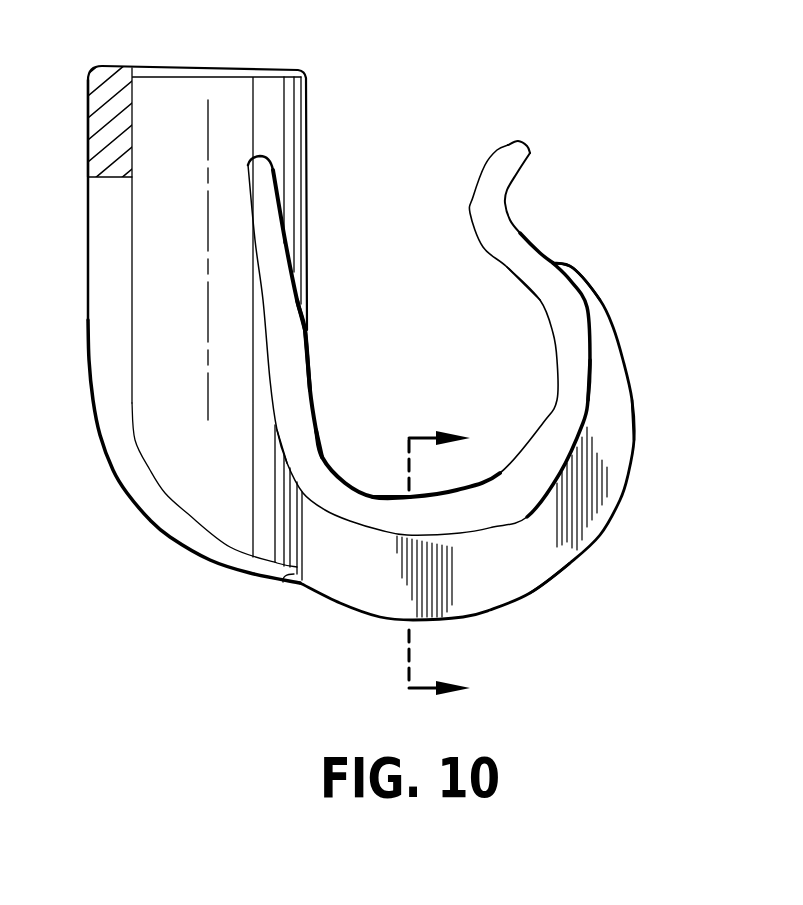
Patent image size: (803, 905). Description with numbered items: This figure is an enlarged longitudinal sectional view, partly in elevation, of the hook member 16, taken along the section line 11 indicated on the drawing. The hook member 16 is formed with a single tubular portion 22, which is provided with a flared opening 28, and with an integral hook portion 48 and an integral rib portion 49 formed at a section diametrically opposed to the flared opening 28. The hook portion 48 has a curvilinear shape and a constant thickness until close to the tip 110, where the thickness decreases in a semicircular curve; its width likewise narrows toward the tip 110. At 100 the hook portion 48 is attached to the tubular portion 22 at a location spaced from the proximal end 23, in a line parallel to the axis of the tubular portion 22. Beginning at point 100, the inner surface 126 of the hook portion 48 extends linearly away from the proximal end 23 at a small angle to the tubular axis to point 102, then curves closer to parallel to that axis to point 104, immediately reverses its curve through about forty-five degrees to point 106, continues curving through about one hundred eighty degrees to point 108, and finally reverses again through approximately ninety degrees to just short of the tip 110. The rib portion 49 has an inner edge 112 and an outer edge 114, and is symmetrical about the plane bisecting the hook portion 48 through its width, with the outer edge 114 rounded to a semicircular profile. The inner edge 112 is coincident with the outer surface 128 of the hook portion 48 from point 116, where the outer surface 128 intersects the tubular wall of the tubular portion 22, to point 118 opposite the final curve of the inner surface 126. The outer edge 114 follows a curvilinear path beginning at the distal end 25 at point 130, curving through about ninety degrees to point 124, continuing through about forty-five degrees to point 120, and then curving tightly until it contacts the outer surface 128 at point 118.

The section line 11- 11 is at (453, 566).
The hook member 16 is at (578, 633).
The tubular portion 22 is at (189, 318).
The proximal end 23 is at (213, 64).
The distal end 25 is at (188, 548).
The flared opening 28 is at (112, 500).
The hook portion 48 is at (557, 398).
The rib portion 49 is at (607, 468).
The attachment point of hook portion 100 is at (253, 157).
The point on inner surface 102 is at (306, 352).
The point on inner surface 104 is at (309, 388).
The point on inner surface 106 is at (322, 445).
The point on inner surface 108 is at (517, 273).
The tip 110 is at (530, 153).
The inner edge of rib portion 112 is at (592, 384).
The outer edge of rib portion 114 is at (633, 437).
The point of intersection with tubular wall 116 is at (299, 475).
The point opposite final curve 118 is at (553, 263).
The point on outer edge 120 is at (573, 268).
The point on outer edge 124 is at (557, 570).
The inner surface of hook portion 126 is at (384, 492).
The outer surface of hook portion 128 is at (520, 232).
The starting point of outer edge 130 is at (293, 590).